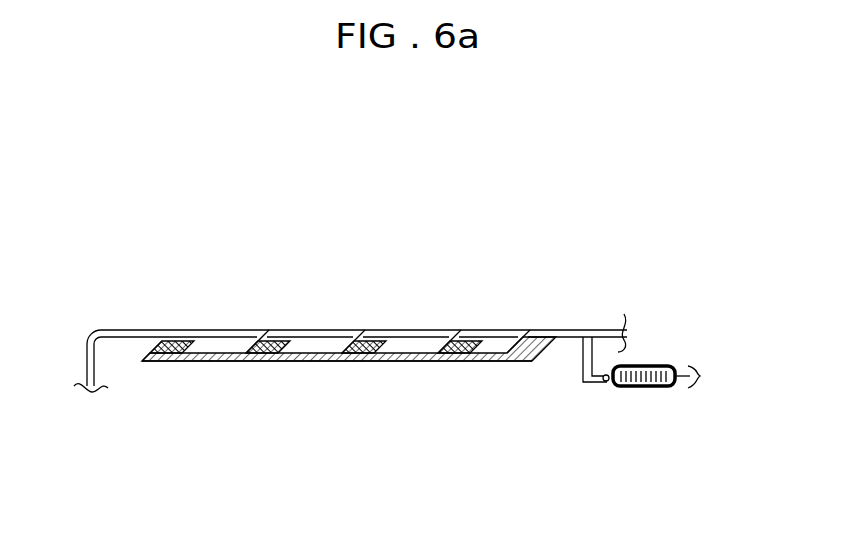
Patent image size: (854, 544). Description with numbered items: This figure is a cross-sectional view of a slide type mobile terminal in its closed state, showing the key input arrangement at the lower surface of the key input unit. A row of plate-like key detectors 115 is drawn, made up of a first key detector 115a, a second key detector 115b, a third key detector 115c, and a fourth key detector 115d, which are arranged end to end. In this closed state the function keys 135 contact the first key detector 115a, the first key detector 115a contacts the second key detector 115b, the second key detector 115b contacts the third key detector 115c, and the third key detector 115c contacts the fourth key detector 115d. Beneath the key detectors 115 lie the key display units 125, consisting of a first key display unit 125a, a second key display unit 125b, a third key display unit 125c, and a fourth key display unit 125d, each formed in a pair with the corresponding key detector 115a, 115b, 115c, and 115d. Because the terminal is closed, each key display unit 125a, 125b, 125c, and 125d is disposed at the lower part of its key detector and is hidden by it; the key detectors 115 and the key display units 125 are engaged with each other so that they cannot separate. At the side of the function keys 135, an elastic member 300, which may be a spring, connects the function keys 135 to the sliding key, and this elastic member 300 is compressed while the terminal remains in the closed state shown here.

The key detectors 115 is at (328, 270).
The first key detector 115a is at (476, 302).
The second key detector 115b is at (394, 330).
The third key detector 115c is at (294, 330).
The fourth key detector 115d is at (196, 330).
The key display units 125 is at (349, 422).
The first key display unit 125a is at (484, 400).
The second key display unit 125b is at (383, 364).
The third key display unit 125c is at (283, 364).
The fourth key display unit 125d is at (187, 364).
The function keys 135 is at (580, 330).
The elastic member 300 is at (645, 388).